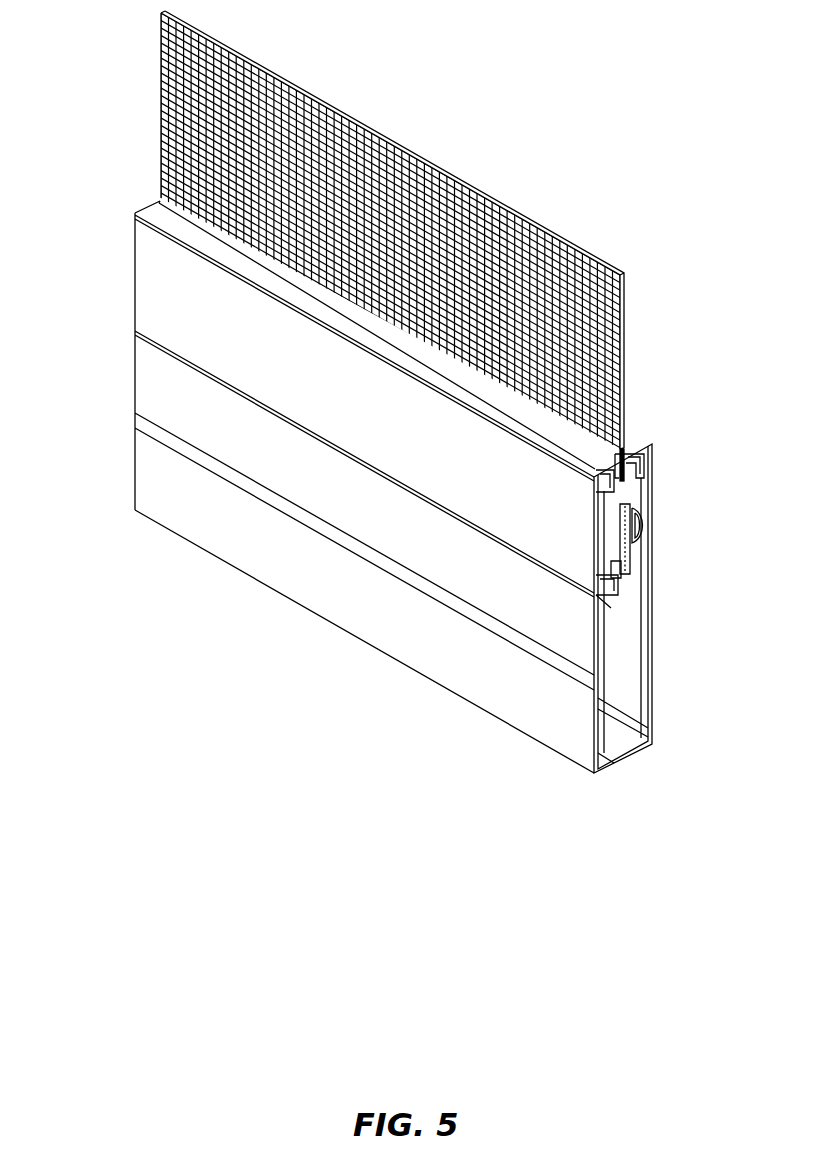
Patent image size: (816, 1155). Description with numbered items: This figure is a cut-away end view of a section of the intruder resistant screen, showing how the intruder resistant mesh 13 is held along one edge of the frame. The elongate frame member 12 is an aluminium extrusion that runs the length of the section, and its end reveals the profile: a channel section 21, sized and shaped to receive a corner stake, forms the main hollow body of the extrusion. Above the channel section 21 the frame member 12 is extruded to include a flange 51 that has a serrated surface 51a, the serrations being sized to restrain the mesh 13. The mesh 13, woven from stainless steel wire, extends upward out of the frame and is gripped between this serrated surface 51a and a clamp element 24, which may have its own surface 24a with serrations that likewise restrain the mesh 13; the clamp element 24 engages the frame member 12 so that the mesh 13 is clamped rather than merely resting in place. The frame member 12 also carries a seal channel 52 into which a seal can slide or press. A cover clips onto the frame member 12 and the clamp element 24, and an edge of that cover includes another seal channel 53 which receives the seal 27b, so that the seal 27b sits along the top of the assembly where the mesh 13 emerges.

The intruder resistant mesh 13 is at (363, 128).
The seal 27b is at (150, 188).
The seal channel 52 is at (642, 452).
The seal channel 53 is at (613, 484).
The flange 51 is at (627, 507).
The serrated surface 51a is at (618, 542).
The surface 24a is at (617, 556).
The clamp element 24 is at (608, 565).
The elongate frame member 12 is at (640, 626).
The channel section 21 is at (613, 633).